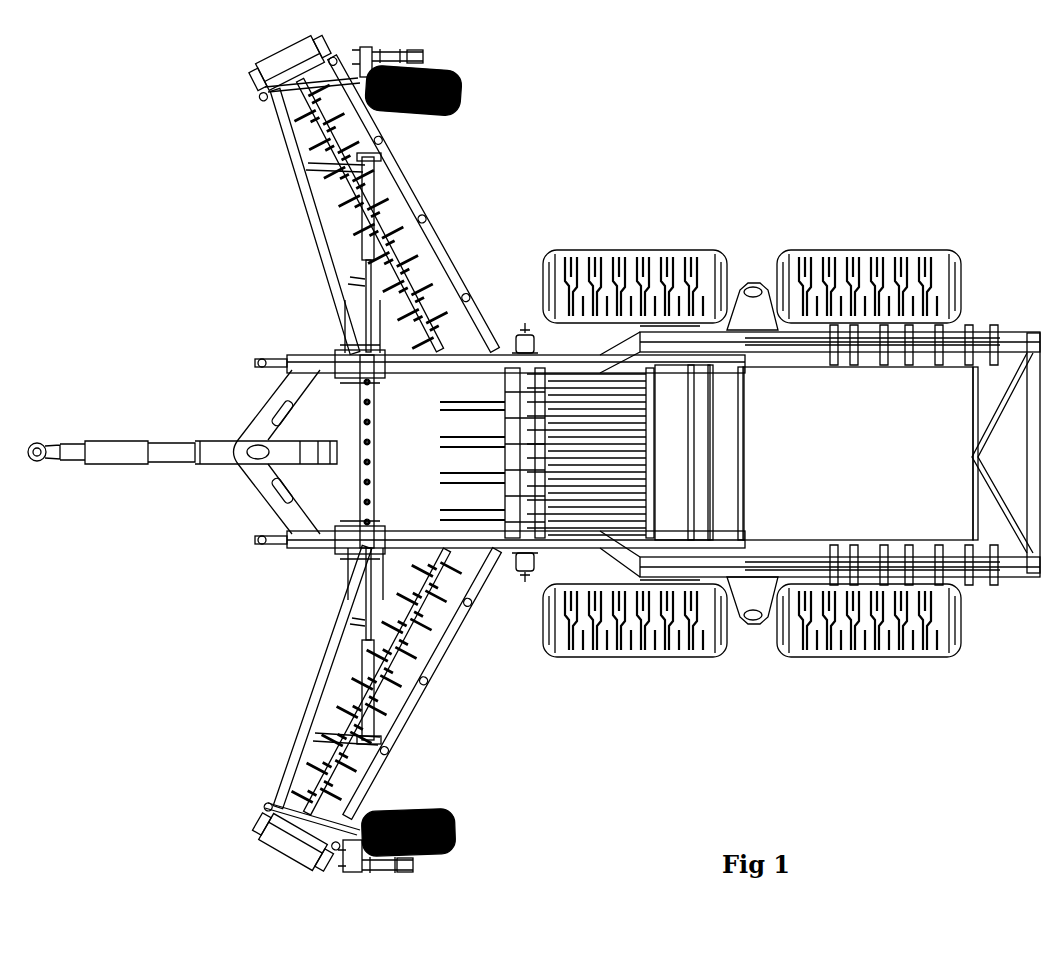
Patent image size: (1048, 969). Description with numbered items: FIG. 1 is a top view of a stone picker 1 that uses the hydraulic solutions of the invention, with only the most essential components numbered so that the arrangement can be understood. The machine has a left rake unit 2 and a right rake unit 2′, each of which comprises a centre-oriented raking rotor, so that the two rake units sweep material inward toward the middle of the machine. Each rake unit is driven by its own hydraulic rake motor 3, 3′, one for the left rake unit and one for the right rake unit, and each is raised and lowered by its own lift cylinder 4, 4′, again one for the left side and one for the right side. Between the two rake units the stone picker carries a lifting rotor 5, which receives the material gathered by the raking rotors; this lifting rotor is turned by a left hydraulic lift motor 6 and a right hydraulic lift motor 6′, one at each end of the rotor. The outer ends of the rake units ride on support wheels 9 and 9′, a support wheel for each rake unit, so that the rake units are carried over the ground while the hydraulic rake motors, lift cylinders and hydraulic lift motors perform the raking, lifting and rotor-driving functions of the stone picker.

The stone picker 1 is at (737, 132).
The left rake unit 2 is at (423, 757).
The right rake unit 2′ is at (440, 203).
The hydraulic rake motor 3 is at (290, 847).
The hydraulic rake motor 3′ is at (290, 55).
The lift cylinder 4 is at (367, 702).
The lift cylinder 4′ is at (357, 230).
The lifting rotor 5 is at (467, 477).
The left hydraulic lift motor 6 is at (523, 578).
The right hydraulic lift motor 6′ is at (517, 330).
The support wheel 9 is at (457, 843).
The support wheel 9′ is at (460, 87).